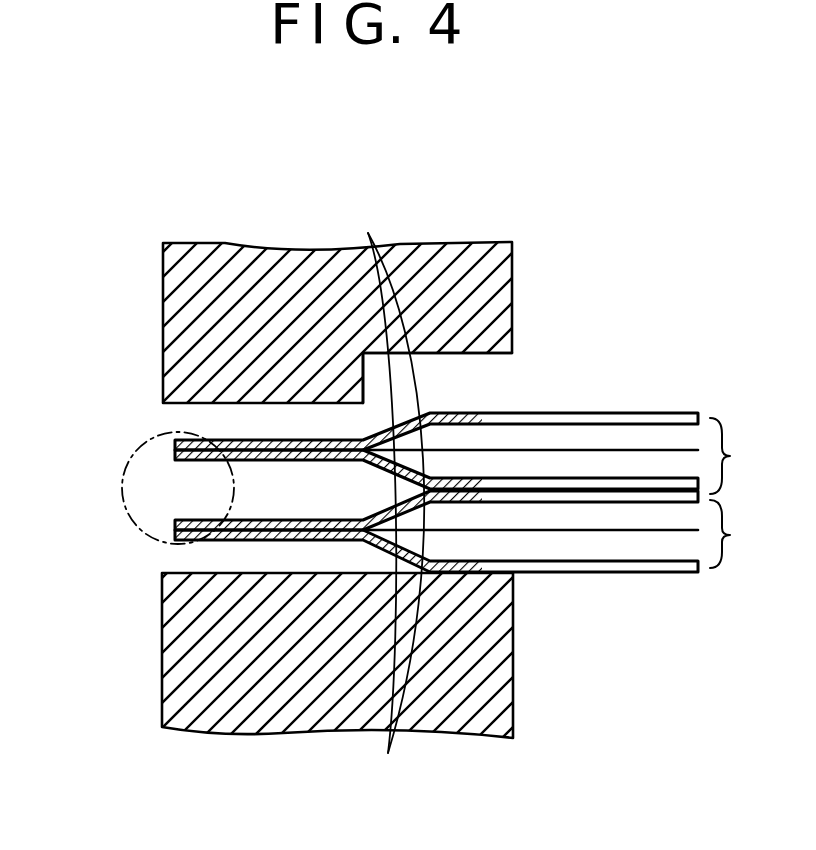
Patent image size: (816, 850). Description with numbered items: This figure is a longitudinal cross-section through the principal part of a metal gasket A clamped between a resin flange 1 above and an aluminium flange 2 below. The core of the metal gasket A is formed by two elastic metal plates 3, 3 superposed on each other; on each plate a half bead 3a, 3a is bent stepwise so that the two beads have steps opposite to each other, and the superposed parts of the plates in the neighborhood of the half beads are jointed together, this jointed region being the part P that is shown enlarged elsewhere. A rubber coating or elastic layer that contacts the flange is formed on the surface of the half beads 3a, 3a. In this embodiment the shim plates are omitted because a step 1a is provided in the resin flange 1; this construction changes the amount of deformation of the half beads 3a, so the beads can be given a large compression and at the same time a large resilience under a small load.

The resin flange 1 is at (218, 246).
The step 1a is at (450, 372).
The aluminium flange 2 is at (232, 702).
The elastic metal plate 3 is at (172, 449).
The half bead 3a is at (389, 498).
The part P is at (121, 483).
The metal gasket A is at (734, 493).